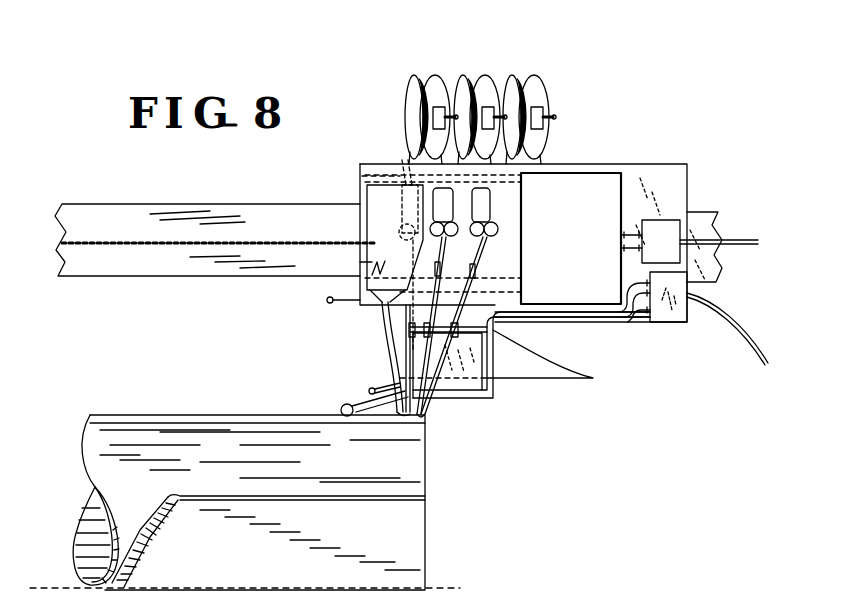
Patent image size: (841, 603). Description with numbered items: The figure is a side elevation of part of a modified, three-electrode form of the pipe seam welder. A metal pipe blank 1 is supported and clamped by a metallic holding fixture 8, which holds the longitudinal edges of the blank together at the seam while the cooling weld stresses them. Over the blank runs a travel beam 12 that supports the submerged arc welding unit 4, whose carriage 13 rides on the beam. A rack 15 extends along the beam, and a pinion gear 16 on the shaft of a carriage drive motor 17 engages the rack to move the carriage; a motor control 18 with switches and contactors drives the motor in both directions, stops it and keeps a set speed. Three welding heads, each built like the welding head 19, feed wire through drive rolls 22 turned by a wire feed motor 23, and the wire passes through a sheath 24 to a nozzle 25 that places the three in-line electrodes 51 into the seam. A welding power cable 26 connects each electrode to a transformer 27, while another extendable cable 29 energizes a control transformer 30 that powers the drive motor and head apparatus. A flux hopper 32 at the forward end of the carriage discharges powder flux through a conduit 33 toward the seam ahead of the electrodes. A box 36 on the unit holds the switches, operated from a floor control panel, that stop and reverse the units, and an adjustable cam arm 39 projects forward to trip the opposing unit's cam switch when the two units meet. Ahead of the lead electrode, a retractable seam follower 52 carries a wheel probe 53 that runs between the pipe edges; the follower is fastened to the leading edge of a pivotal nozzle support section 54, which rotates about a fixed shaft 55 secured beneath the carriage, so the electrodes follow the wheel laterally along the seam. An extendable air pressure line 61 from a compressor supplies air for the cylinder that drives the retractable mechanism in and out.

The metal pipe blank 1 is at (151, 420).
The second submerged arc welding unit 4 is at (322, 190).
The holding fixture 8 is at (410, 525).
The travel beam 12 is at (197, 204).
The carriage 13 is at (640, 178).
The rack 15 is at (246, 240).
The pinion gear 16 is at (392, 226).
The carriage drive motor 17 is at (363, 177).
The motor control 18 is at (402, 160).
The welding head 19 is at (478, 58).
The drive rolls 22 is at (450, 237).
The wire feed motor 23 is at (450, 213).
The sheath 24 is at (408, 304).
The nozzle 25 is at (430, 403).
The welding power cable 26 is at (748, 332).
The transformer 27 is at (676, 315).
The extendable cable 29 is at (744, 248).
The control transformer 30 is at (650, 241).
The flux hopper 32 is at (370, 262).
The conduit 33 is at (383, 323).
The box 36 is at (571, 238).
The cam arm 39 is at (327, 303).
The electrodes 51 is at (430, 421).
The retractable seam follower 52 is at (359, 396).
The wheel probe 53 is at (341, 409).
The pivotal nozzle support section 54 is at (485, 375).
The fixed shaft 55 is at (464, 320).
The extendable air pressure line 61 is at (590, 383).